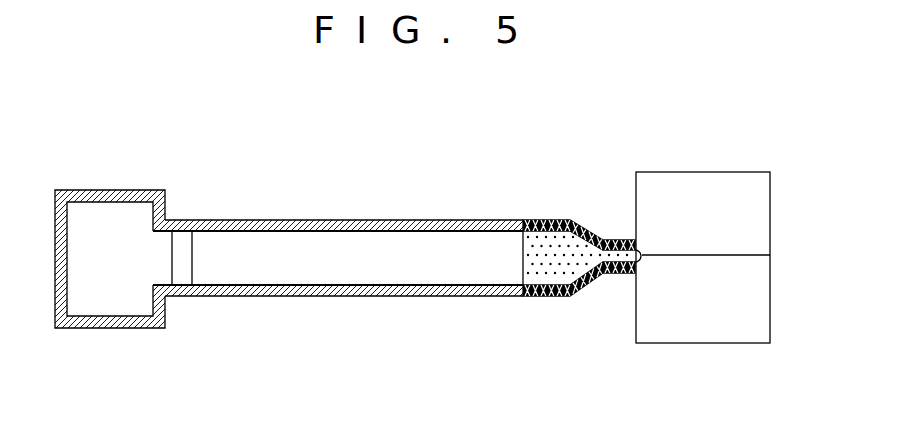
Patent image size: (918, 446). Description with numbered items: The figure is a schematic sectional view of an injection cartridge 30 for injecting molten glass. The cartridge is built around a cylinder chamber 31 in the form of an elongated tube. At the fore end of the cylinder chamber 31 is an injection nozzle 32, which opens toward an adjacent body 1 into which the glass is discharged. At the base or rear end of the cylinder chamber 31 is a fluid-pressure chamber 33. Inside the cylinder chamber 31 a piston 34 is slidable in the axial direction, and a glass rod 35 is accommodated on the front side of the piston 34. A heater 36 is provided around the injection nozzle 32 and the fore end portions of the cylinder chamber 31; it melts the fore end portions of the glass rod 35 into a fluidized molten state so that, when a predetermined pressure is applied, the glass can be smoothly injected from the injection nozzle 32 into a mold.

The main body / glass body to be sealed 1 is at (697, 172).
The injection cartridge 30 is at (382, 212).
The cylinder chamber 31 is at (303, 220).
The injection nozzle 32 is at (572, 290).
The fluid-pressure chamber 33 is at (98, 190).
The piston 34 is at (183, 262).
The glass rod 35 is at (298, 260).
The heater 36 is at (584, 220).